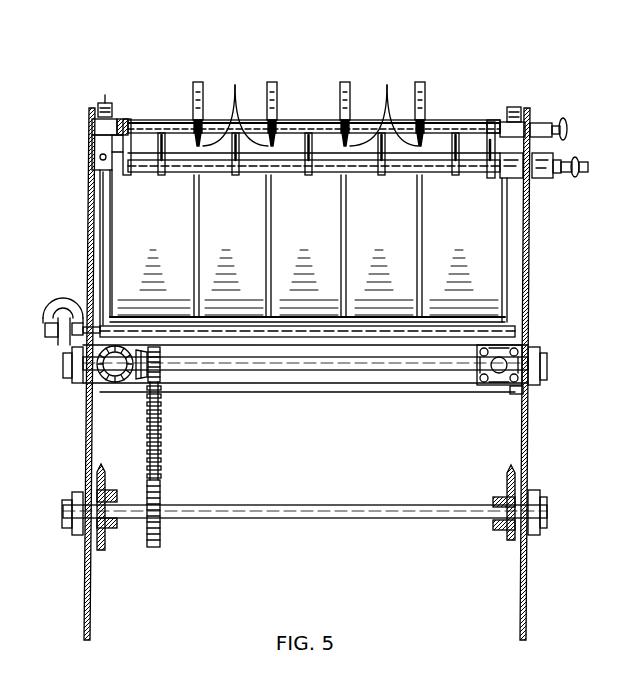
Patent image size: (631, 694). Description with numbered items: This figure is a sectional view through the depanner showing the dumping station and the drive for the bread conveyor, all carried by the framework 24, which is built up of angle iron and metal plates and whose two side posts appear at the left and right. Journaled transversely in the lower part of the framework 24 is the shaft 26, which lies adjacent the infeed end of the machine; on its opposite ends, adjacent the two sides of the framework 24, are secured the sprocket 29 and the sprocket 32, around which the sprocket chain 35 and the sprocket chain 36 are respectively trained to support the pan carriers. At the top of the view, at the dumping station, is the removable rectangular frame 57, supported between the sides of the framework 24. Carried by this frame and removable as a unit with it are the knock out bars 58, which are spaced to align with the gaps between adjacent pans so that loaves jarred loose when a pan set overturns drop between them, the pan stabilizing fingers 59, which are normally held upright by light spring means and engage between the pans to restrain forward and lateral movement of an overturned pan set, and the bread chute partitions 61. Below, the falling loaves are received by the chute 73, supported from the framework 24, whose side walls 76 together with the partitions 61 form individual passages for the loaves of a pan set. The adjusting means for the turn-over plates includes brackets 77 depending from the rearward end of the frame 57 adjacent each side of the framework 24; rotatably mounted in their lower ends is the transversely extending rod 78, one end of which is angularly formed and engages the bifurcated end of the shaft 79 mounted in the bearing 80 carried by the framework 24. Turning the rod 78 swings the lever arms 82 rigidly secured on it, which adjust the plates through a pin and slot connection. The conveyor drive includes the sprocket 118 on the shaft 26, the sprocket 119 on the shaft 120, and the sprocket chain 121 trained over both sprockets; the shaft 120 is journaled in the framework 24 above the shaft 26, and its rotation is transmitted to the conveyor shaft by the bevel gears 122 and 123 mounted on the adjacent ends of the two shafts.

The framework 24 is at (88, 222).
The shaft 26 is at (275, 519).
The sprocket 29 is at (103, 550).
The sprocket 32 is at (506, 545).
The sprocket chain 35 is at (103, 103).
The sprocket chain 36 is at (516, 105).
The rectangular frame 57 is at (298, 120).
The knock out bars 58 is at (235, 85).
The pan stabilizing fingers 59 is at (198, 82).
The bread chute partitions 61 is at (265, 272).
The chute 73 is at (112, 247).
The side walls 76 is at (110, 278).
The brackets 77 is at (127, 175).
The rod 78 is at (284, 172).
The shaft 79 is at (568, 178).
The bearing 80 is at (550, 157).
The lever arms 82 is at (162, 175).
The sprocket 118 is at (159, 542).
The sprocket 119 is at (160, 382).
The shaft 120 is at (307, 372).
The sprocket chain 121 is at (159, 442).
The bevel gear 122 is at (118, 385).
The bevel gear 123 is at (137, 385).